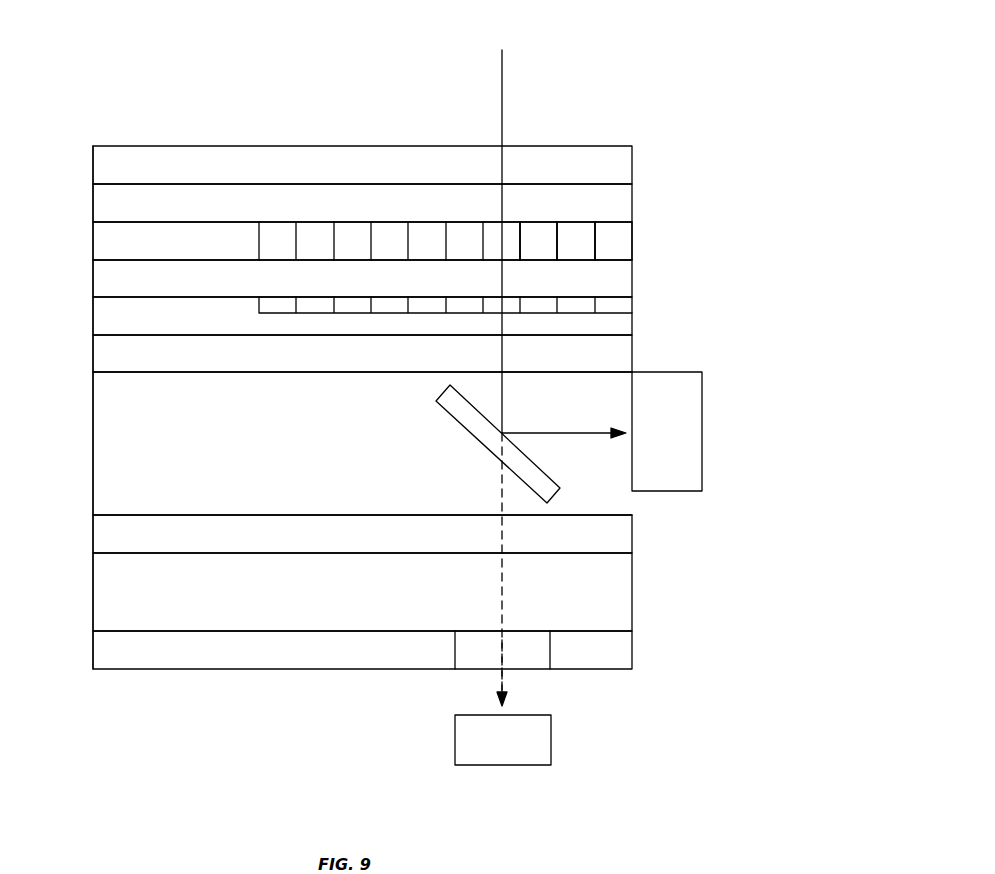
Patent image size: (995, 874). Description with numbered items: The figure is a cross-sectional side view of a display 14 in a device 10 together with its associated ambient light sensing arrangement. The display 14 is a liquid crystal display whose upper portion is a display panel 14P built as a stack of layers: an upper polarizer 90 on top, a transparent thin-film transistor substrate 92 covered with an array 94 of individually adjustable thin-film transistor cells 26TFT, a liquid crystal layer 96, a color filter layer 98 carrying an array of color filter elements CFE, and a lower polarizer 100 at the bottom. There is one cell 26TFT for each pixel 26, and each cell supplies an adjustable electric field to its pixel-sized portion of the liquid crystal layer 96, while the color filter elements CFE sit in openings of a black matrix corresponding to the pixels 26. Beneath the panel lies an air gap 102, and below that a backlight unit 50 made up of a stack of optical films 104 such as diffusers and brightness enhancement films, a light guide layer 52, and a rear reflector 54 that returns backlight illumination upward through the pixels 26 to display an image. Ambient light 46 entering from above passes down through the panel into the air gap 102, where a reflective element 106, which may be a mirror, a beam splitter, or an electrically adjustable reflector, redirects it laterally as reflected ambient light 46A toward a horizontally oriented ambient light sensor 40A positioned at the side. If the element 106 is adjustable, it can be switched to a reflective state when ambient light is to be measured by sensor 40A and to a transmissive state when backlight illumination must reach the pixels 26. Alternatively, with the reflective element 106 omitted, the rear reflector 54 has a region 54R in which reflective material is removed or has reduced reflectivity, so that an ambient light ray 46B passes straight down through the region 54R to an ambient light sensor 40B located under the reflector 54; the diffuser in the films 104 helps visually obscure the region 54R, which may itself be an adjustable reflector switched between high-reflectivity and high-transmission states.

The display 14 is at (206, 70).
The device 10 is at (840, 137).
The display panel 14P is at (731, 143).
The backlight unit 50 is at (712, 515).
The upper polarizer 90 is at (100, 166).
The thin-film transistor substrate 92 is at (100, 204).
The array of thin-film transistor cells 94 is at (100, 242).
The liquid crystal layer 96 is at (100, 278).
The color filter layer 98 is at (100, 318).
The lower polarizer 100 is at (100, 358).
The air gap 102 is at (100, 457).
The optical films 104 is at (100, 538).
The light guide layer 52 is at (100, 600).
The rear reflector 54 is at (100, 650).
The region 54R is at (455, 648).
The pixels 26 is at (594, 141).
The thin-film transistor cells 26TFT is at (540, 232).
The color filter elements CFE is at (612, 304).
The ambient light 46 is at (502, 77).
The reflected ambient light 46A is at (573, 434).
The ambient light ray 46B is at (530, 670).
The reflective element 106 is at (458, 432).
The ambient light sensor 40A is at (702, 431).
The ambient light sensor 40B is at (502, 765).